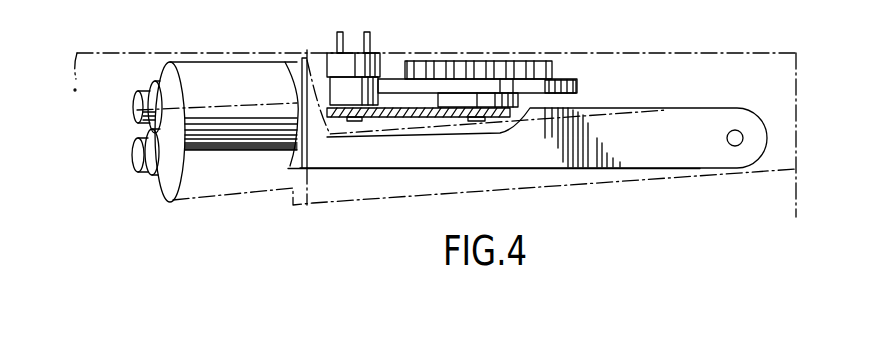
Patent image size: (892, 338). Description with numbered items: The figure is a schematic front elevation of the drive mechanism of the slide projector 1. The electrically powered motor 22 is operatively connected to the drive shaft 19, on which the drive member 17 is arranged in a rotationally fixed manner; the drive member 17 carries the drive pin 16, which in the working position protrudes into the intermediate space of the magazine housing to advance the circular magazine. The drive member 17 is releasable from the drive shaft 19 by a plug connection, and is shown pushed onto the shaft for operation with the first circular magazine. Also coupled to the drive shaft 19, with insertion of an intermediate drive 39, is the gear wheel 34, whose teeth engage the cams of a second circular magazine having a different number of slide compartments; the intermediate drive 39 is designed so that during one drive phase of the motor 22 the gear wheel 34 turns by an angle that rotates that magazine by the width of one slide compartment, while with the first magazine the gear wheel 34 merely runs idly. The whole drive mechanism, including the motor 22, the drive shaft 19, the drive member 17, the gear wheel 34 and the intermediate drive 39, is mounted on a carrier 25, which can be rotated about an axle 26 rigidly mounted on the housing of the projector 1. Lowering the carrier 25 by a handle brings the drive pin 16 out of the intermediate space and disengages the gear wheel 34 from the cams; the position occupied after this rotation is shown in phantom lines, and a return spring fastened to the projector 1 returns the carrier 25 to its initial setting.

The projector 1 is at (780, 179).
The drive pin 16 is at (373, 36).
The drive member 17 is at (328, 59).
The drive shaft 19 is at (341, 96).
The motor 22 is at (191, 67).
The carrier 25 is at (660, 127).
The axle 26 is at (729, 131).
The gear wheel 34 is at (515, 64).
The intermediate drive 39 is at (567, 80).